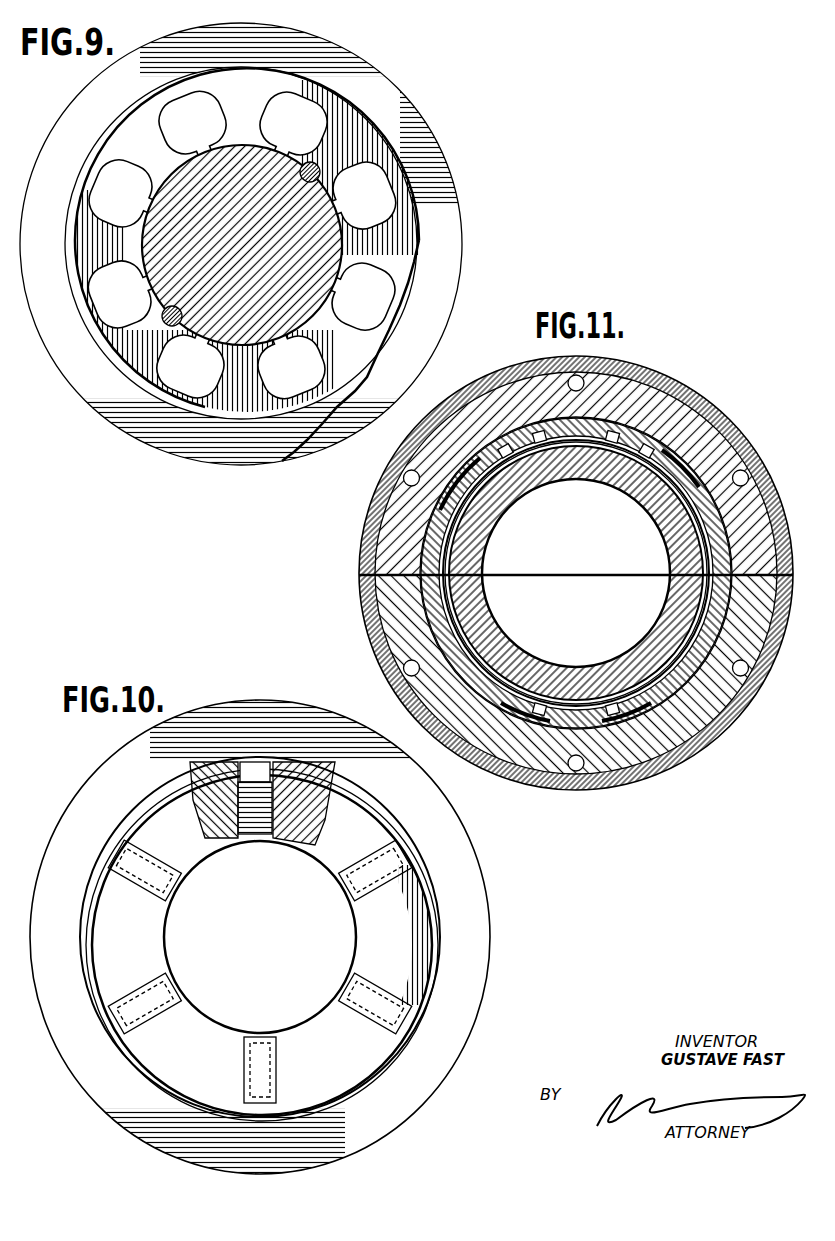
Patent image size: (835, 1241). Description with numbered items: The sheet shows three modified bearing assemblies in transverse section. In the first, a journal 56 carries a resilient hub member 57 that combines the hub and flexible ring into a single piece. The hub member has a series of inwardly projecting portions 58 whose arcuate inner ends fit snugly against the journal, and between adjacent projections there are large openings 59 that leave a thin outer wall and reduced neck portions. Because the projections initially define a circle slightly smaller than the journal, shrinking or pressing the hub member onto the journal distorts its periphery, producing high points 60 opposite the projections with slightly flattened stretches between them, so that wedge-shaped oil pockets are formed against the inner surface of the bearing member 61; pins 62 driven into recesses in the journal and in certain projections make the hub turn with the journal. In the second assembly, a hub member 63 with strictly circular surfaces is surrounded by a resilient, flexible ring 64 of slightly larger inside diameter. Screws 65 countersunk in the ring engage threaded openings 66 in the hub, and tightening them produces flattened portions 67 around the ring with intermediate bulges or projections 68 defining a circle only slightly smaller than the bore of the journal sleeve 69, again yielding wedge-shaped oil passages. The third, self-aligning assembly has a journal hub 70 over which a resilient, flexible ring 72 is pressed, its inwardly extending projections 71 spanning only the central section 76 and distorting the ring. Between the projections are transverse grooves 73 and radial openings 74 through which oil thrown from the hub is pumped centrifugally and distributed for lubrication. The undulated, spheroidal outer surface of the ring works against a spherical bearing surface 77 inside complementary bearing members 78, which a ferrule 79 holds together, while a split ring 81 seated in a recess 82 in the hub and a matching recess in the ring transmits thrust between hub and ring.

In FIG. 9, the journal 56 is at (327, 247).
In FIG. 9, the resilient hub member 57 is at (403, 272).
In FIG. 9, the inwardly projecting portions 58 is at (313, 332).
In FIG. 9, the openings 59 is at (368, 320).
In FIG. 9, the high points 60 is at (363, 372).
In FIG. 9, the bearing member 61 is at (432, 194).
In FIG. 9, the pins 62 is at (318, 167).
In FIG. 10, the hub member 63 is at (395, 947).
In FIG. 10, the resilient flexible ring 64 is at (433, 920).
In FIG. 10, the screws 65 is at (270, 767).
In FIG. 10, the openings 66 is at (268, 835).
In FIG. 10, the flattened portions 67 is at (412, 1010).
In FIG. 10, the bulges or projections 68 is at (357, 1090).
In FIG. 10, the journal sleeve 69 is at (466, 997).
In FIG. 11, the journal hub 70 is at (647, 490).
In FIG. 11, the inwardly extending projections 71 is at (670, 473).
In FIG. 11, the resilient flexible ring 72 is at (460, 475).
In FIG. 11, the transverse grooves 73 is at (720, 633).
In FIG. 11, the radial openings 74 is at (523, 703).
In FIG. 11, the central section 76 is at (470, 487).
In FIG. 11, the spherical bearing surface 77 is at (537, 432).
In FIG. 11, the complementary bearing members 78 is at (518, 400).
In FIG. 11, the ferrule 79 is at (693, 447).
In FIG. 11, the split ring 81 is at (528, 710).
In FIG. 11, the recess 82 is at (502, 450).